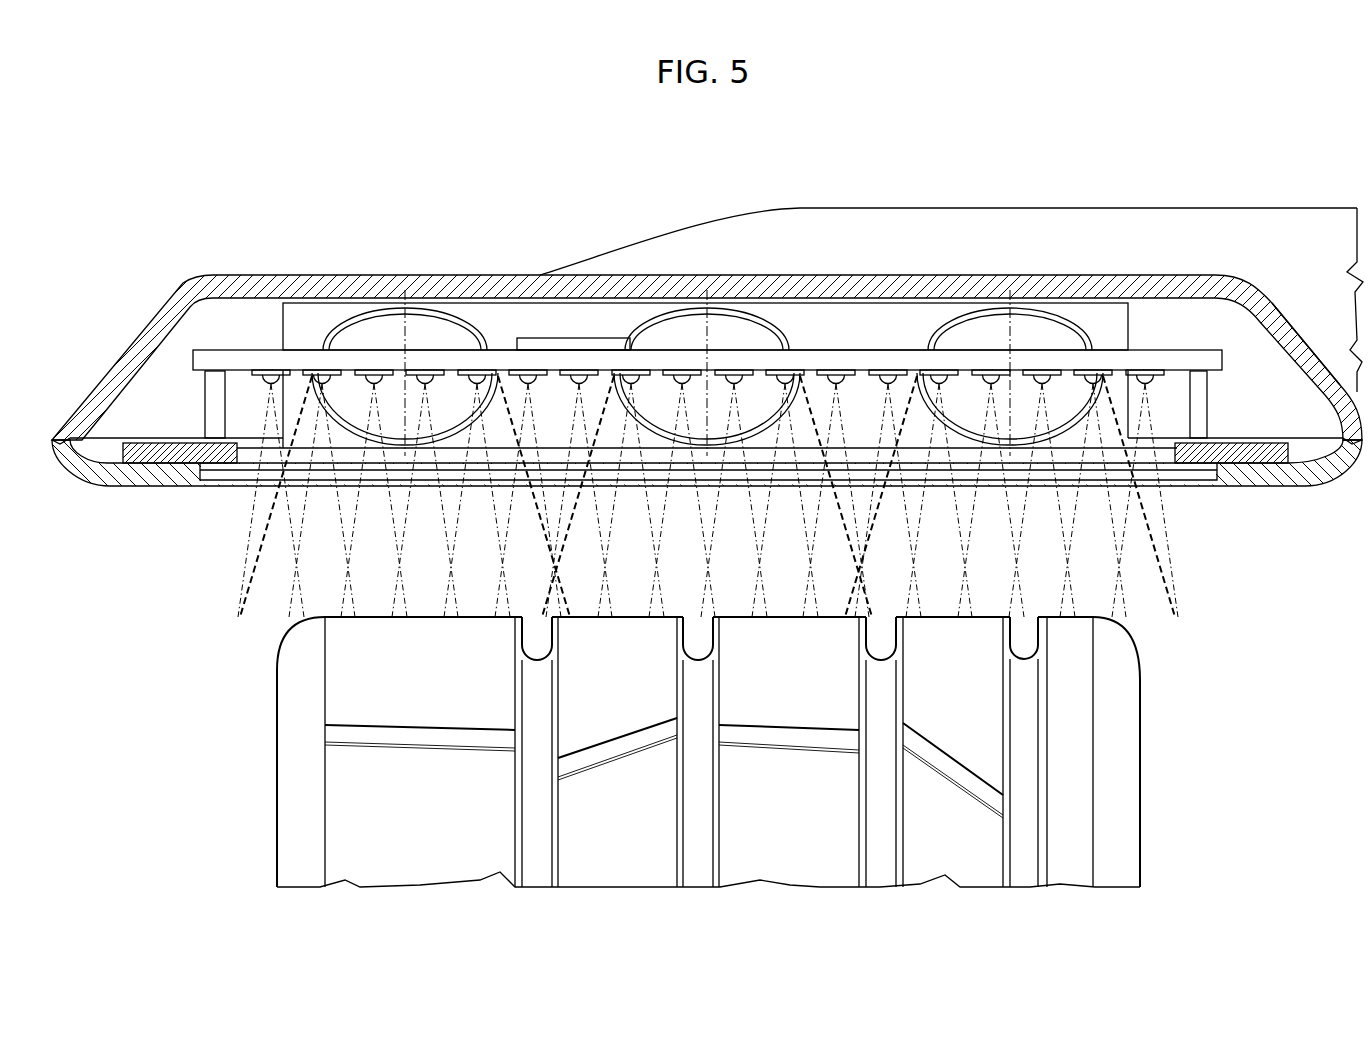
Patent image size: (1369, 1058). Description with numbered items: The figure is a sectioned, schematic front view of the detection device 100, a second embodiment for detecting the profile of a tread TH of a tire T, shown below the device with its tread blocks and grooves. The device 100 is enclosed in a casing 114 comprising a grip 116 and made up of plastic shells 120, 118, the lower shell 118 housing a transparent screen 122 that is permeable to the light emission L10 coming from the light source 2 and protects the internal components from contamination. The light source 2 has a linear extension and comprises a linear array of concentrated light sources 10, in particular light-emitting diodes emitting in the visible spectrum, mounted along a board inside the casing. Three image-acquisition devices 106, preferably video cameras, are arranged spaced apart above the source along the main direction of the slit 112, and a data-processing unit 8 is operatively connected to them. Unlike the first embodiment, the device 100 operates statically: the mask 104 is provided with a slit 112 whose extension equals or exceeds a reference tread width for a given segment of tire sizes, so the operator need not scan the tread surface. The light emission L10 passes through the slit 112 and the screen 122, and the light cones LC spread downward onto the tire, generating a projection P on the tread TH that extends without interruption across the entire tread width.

The detection device 100 is at (1092, 187).
The grip 116 is at (878, 214).
The shell 120 is at (133, 318).
The casing 114 is at (1284, 318).
The shell 118 is at (75, 472).
The transparent screen 122 is at (648, 478).
The slit 112 is at (250, 462).
The mask 104 is at (1268, 439).
The light source 2 is at (872, 337).
The data-processing unit 8 is at (578, 340).
The image-acquisition device 106 is at (366, 322).
The concentrated light source 10 is at (248, 383).
The light emission L10 is at (266, 401).
The light cone region LC is at (1195, 438).
The projection P is at (380, 612).
The tire T is at (252, 838).
The tread TH is at (347, 680).